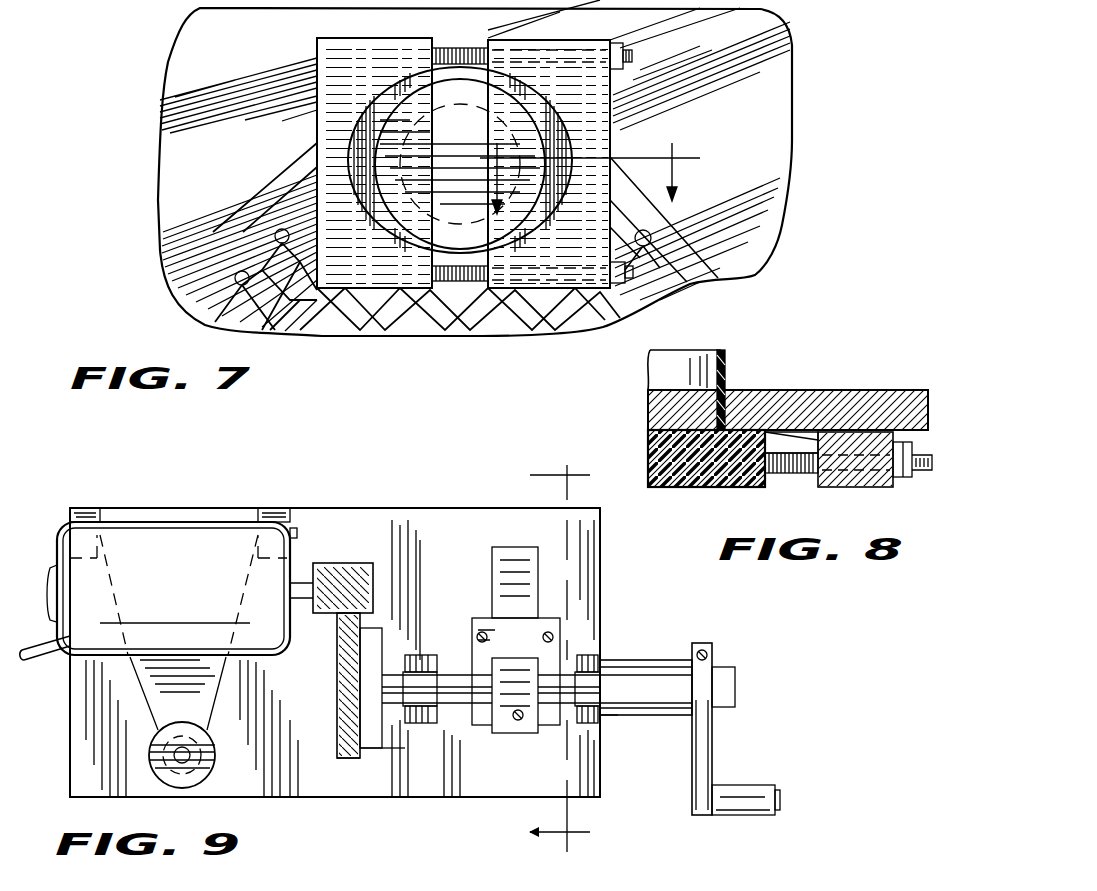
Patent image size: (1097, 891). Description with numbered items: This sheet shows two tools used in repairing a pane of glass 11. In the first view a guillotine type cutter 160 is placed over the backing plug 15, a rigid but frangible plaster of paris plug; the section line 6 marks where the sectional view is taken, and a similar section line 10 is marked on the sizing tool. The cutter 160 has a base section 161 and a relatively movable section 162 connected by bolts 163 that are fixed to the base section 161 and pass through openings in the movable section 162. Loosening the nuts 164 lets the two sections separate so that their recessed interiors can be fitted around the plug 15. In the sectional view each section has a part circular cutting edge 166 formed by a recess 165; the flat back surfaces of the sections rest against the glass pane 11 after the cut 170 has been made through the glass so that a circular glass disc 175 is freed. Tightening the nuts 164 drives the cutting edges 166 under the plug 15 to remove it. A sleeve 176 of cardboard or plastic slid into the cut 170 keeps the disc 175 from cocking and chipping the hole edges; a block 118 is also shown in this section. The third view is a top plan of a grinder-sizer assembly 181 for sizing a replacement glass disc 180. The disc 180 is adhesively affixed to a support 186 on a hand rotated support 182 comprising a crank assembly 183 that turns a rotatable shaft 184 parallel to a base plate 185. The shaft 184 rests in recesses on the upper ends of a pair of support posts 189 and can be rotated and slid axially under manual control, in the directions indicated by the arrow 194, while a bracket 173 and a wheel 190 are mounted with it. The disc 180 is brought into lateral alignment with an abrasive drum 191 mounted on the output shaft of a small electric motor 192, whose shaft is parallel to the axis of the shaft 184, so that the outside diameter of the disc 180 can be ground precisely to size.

In FIG. 7, the section line 6- 6 is at (590, 163).
In FIG. 9, the section line 10- 10 is at (522, 658).
In FIG. 8, the glass pane 11 is at (893, 402).
In FIG. 7, the backing plug 15 is at (568, 214).
In FIG. 8, the backing plug 15 is at (697, 488).
In FIG. 8, the mounting block 118 is at (876, 470).
In FIG. 7, the guillotine type cutter 160 is at (528, 296).
In FIG. 7, the base section 161 is at (383, 272).
In FIG. 7, the movable section 162 is at (676, 213).
In FIG. 7, the bolts 163 is at (463, 283).
In FIG. 7, the nuts 164 is at (624, 278).
In FIG. 8, the recess 165 is at (766, 432).
In FIG. 7, the cutting edge 166 is at (530, 108).
In FIG. 8, the cutting edge 166 is at (797, 446).
In FIG. 7, the cut 170 is at (578, 50).
In FIG. 8, the cut 170 is at (720, 488).
In FIG. 9, the bracket 173 is at (515, 658).
In FIG. 8, the glass disc 175 is at (668, 408).
In FIG. 8, the sleeve 176 is at (728, 362).
In FIG. 9, the glass disc 180 is at (346, 752).
In FIG. 9, the grinder-sizer assembly 181 is at (283, 798).
In FIG. 9, the hand rotated support 182 is at (600, 718).
In FIG. 9, the crank assembly 183 is at (652, 672).
In FIG. 9, the rotatable shaft 184 is at (455, 724).
In FIG. 9, the base plate 185 is at (410, 762).
In FIG. 9, the support 186 is at (363, 758).
In FIG. 9, the support posts 189 is at (575, 656).
In FIG. 9, the wheel 190 is at (338, 705).
In FIG. 9, the abrasive drum 191 is at (355, 565).
In FIG. 9, the electric motor 192 is at (175, 562).
In FIG. 9, the arrow 194 is at (760, 683).